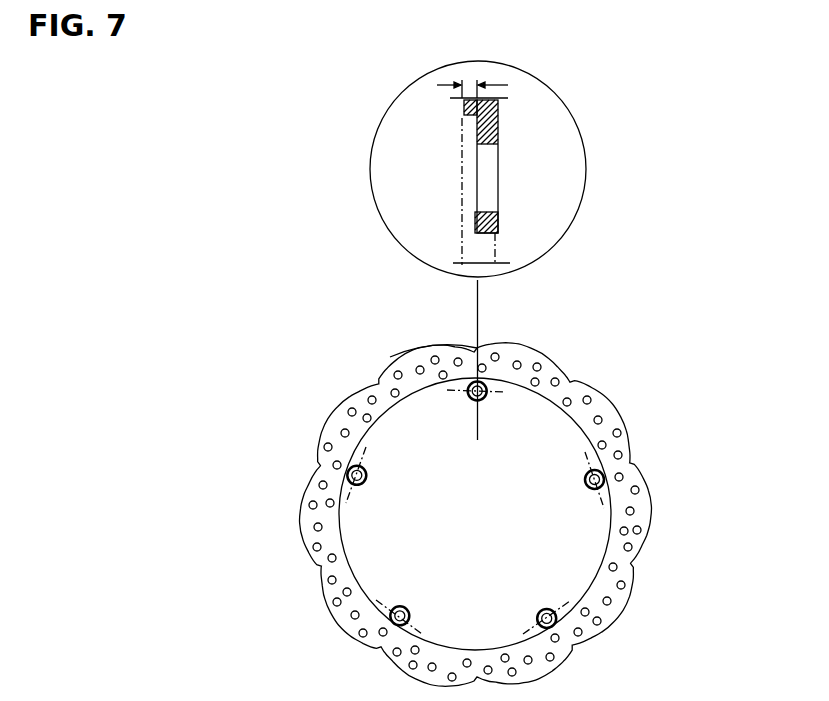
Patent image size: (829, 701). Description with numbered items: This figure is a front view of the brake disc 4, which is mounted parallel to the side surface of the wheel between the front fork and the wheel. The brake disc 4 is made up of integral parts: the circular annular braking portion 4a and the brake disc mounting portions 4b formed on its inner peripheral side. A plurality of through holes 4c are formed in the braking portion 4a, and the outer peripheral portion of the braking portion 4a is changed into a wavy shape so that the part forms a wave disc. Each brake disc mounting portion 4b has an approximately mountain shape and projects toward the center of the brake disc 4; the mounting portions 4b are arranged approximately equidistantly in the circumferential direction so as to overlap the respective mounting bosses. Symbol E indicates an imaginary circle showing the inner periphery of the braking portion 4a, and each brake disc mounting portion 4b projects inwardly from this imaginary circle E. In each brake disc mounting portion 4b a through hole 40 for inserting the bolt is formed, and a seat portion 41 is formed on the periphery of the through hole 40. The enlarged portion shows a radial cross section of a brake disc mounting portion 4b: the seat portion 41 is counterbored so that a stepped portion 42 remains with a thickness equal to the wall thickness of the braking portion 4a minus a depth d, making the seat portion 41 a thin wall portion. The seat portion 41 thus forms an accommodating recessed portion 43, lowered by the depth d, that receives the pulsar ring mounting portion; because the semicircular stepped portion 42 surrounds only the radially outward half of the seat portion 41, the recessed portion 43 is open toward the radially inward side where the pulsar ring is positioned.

The brake disc 4 is at (377, 374).
The braking portion 4a is at (423, 352).
The brake disc mounting portion 4b is at (469, 397).
The through holes 4c is at (368, 400).
The through hole 40 is at (471, 400).
The seat portion 41 is at (484, 404).
The stepped portion 42 is at (486, 390).
The accommodating recessed portion 43 is at (462, 175).
The imaginary circle E is at (479, 390).
The depth d is at (466, 88).